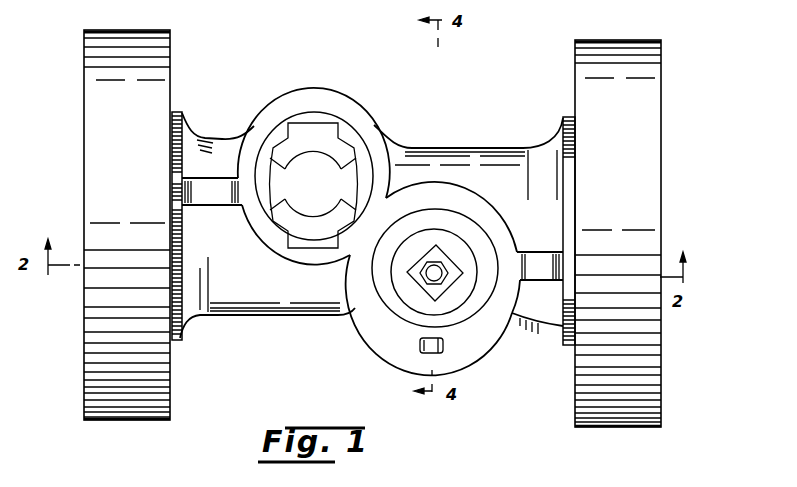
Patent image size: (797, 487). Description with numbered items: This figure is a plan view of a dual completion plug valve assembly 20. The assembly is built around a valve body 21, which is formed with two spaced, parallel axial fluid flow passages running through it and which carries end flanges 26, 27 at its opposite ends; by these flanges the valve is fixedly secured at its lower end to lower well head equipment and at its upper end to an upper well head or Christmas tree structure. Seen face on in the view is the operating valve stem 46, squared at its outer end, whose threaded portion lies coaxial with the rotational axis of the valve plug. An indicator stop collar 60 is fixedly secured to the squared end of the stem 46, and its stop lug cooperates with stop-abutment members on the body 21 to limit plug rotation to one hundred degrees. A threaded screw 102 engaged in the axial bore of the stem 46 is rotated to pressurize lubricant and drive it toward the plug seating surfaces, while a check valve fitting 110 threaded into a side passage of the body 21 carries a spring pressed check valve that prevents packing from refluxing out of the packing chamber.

The dual completion plug valve assembly 20 is at (540, 50).
The valve body 21 is at (463, 167).
The end flange 26 is at (665, 92).
The end flange 27 is at (92, 58).
The operating valve stem 46 is at (441, 268).
The indicator stop collar 60 is at (435, 230).
The threaded screw 102 is at (431, 277).
The check valve fitting 110 is at (446, 342).